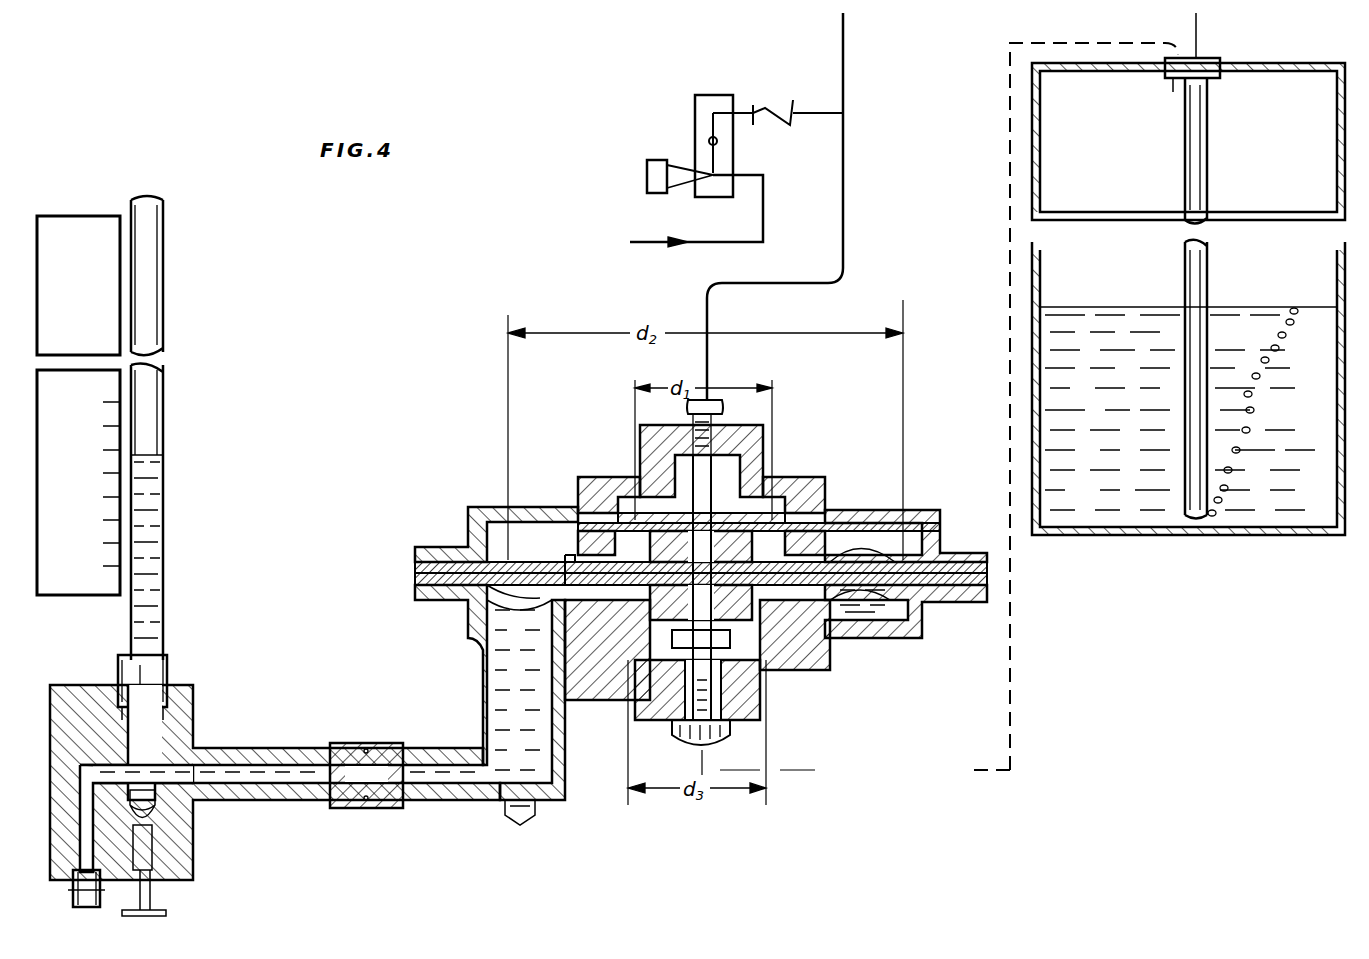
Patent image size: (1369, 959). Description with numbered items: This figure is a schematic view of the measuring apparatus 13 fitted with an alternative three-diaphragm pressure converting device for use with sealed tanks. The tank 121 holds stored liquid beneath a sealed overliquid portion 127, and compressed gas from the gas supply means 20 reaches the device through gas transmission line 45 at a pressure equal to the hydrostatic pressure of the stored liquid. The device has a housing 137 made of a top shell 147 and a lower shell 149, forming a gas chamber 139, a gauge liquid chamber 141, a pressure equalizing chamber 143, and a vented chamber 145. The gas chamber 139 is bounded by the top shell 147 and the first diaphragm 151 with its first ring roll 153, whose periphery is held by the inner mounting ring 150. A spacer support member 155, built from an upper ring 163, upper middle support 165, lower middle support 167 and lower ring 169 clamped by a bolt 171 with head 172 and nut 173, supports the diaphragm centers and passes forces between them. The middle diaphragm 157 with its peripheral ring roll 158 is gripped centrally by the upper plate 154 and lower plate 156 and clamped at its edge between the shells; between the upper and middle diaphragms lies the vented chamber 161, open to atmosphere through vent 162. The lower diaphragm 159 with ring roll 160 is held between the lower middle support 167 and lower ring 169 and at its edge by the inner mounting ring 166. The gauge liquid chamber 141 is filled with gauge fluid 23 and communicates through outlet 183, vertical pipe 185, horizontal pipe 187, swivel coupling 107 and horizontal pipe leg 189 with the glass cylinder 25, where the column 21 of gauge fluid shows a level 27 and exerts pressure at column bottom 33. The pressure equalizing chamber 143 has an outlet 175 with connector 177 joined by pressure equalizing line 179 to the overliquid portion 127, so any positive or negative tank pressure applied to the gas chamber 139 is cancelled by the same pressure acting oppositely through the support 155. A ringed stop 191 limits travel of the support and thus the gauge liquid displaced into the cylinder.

The apparatus 13 is at (225, 330).
The compressed gas supply means 20 is at (640, 242).
The column 21 is at (150, 582).
The gauge fluid 23 is at (164, 520).
The glass cylinder 25 is at (164, 430).
The gauge fluid level 27 is at (164, 458).
The column bottom 33 is at (100, 760).
The gas transmission line 45 is at (844, 246).
The swivel coupling 107 is at (368, 808).
The tank 121 is at (1320, 72).
The overliquid portion 127 is at (1265, 100).
The housing 137 is at (925, 492).
The gas chamber 139 is at (665, 480).
The gauge liquid chamber 141 is at (925, 625).
The pressure equalizing chamber 143 is at (645, 700).
The vented chamber 145 is at (838, 540).
The top shell 147 is at (905, 530).
The lower shell 149 is at (920, 638).
The inner mounting ring 150 is at (835, 562).
The first diaphragm 151 is at (808, 495).
The first ring roll 153 is at (582, 512).
The upper plate 154 is at (568, 558).
The spacer support member 155 is at (650, 495).
The lower plate 156 is at (487, 612).
The middle diaphragm 157 is at (990, 580).
The peripheral ring roll 158 is at (468, 545).
The lower diaphragm 159 is at (828, 630).
The ring roll 160 is at (615, 665).
The vented chamber 161 is at (925, 535).
The vent 162 is at (888, 500).
The upper ring 163 is at (760, 500).
The upper middle support 165 is at (789, 546).
The inner mounting ring 166 is at (880, 640).
The lower middle support 167 is at (800, 670).
The lower ring 169 is at (770, 660).
The bolt 171 is at (715, 450).
The head 172 is at (701, 634).
The nut 173 is at (688, 440).
The outlet 175 is at (715, 587).
The connector 177 is at (705, 740).
The pressure equalizing line 179 is at (975, 772).
The outlet 183 is at (483, 636).
The vertical pipe 185 is at (485, 688).
The horizontal pipe 187 is at (455, 800).
The horizontal pipe leg 189 is at (280, 800).
The ringed stop 191 is at (625, 690).